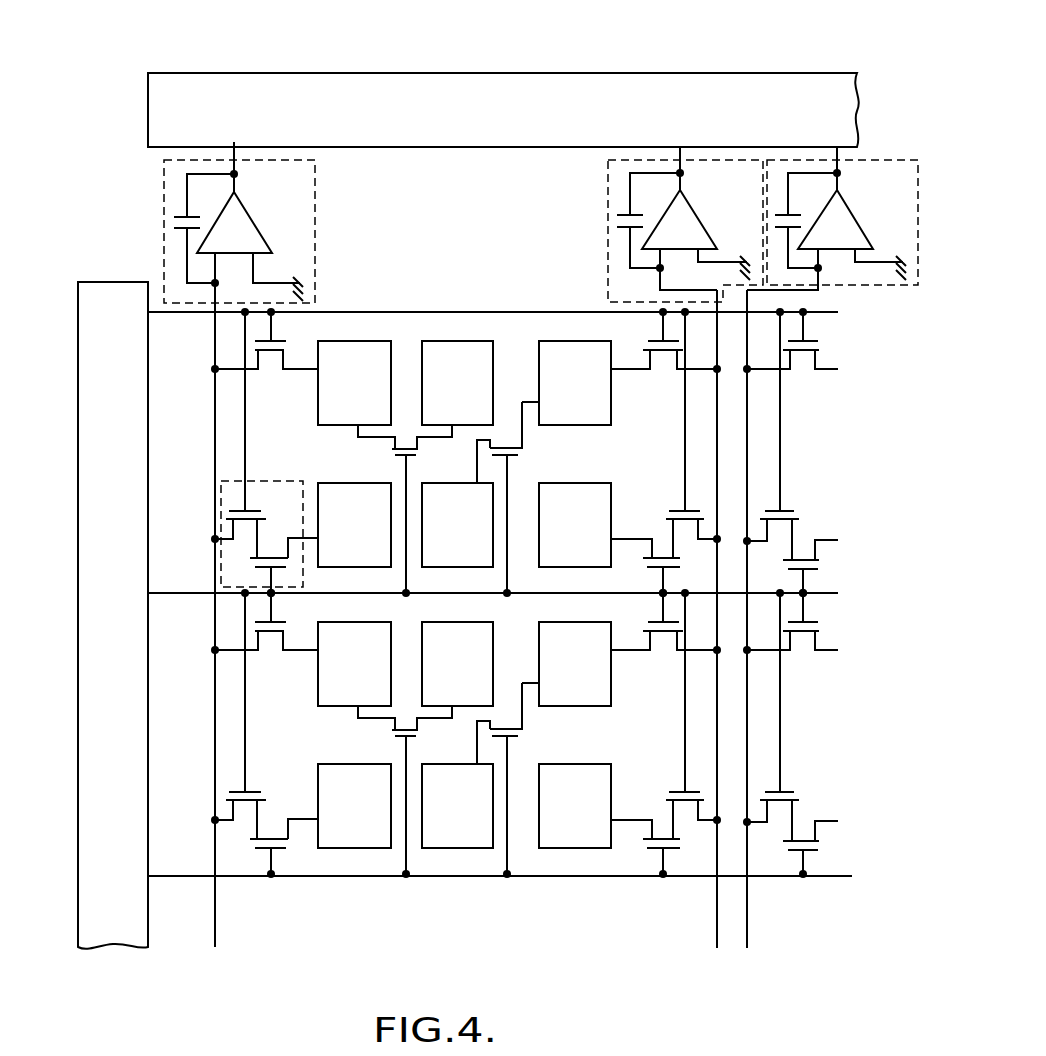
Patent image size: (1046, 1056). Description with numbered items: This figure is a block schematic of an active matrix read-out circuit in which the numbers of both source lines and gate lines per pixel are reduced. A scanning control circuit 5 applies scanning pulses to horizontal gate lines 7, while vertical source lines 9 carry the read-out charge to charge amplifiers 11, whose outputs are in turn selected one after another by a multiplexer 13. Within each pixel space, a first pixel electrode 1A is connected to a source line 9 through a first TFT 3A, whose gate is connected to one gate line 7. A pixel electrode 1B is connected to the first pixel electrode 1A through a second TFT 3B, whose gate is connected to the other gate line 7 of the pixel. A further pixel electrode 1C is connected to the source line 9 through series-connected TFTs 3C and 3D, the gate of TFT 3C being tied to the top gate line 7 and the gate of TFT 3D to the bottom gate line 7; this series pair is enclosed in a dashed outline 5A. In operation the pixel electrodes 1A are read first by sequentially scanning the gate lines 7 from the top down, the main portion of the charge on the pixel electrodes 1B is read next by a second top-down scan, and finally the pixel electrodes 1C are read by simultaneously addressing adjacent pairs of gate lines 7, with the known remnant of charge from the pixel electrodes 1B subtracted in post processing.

The multiplexer 13 is at (700, 87).
The charge amplifier 11 is at (164, 215).
The scanning control circuit 5 is at (85, 375).
The portion shown in dashed outline 5A is at (228, 481).
The gate line 7 is at (823, 317).
The source line 9 is at (215, 931).
The first TFT 3A is at (256, 338).
The second TFT 3B is at (396, 459).
The TFT 3C is at (263, 503).
The TFT 3D is at (250, 571).
The first pixel electrode 1A is at (464, 523).
The second pixel electrode 1B is at (457, 594).
The second pixel electrode 1C is at (464, 665).